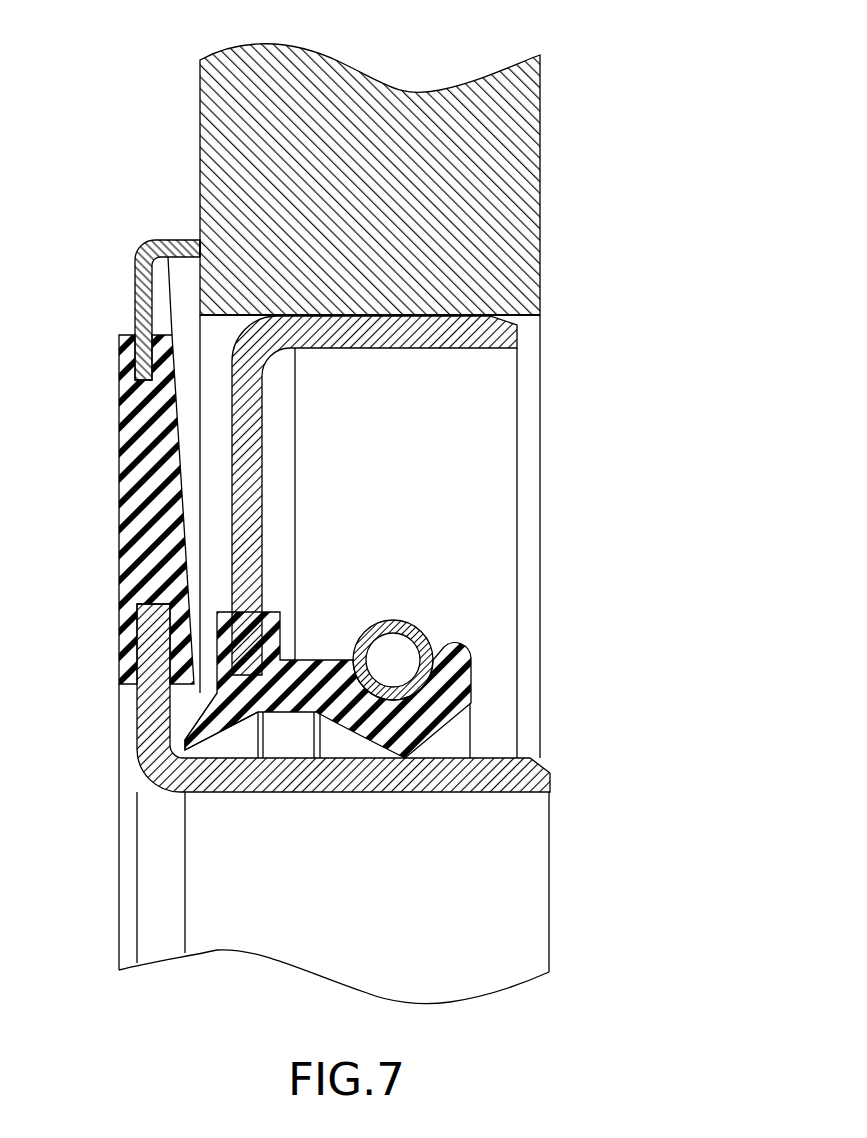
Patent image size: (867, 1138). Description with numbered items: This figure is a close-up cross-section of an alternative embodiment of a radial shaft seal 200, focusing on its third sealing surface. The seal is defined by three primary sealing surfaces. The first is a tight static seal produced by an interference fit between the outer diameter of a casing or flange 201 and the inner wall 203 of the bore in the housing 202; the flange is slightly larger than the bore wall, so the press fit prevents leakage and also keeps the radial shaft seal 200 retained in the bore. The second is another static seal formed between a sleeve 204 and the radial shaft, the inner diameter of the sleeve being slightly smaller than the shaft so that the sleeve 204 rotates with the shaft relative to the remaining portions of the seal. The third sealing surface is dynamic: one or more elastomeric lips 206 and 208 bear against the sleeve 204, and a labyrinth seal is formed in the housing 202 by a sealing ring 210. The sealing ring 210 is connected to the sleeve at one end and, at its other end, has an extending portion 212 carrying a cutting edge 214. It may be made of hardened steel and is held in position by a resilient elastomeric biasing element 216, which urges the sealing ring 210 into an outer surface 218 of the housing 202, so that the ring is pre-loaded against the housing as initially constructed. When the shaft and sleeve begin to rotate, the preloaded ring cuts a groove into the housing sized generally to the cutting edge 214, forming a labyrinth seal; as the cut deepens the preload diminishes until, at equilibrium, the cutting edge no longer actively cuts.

The radial shaft seal 200 is at (652, 98).
The casing or flange 201 is at (512, 334).
The housing 202 is at (525, 274).
The inner wall 203 is at (540, 312).
The sleeve 204 is at (545, 780).
The elastomeric lip 206 is at (405, 758).
The elastomeric lip 208 is at (205, 753).
The sealing ring 210 is at (135, 288).
The extending portion 212 is at (197, 240).
The cutting edge 214 is at (200, 240).
The resilient elastomeric biasing element 216 is at (128, 487).
The outer surface 218 is at (200, 143).